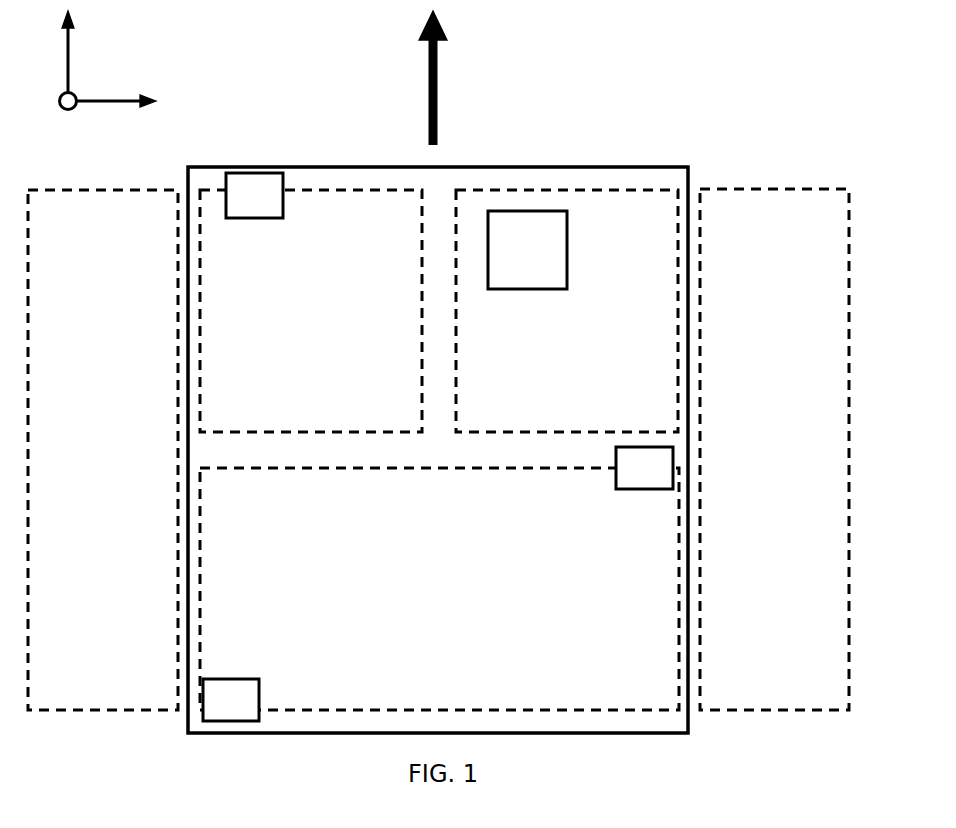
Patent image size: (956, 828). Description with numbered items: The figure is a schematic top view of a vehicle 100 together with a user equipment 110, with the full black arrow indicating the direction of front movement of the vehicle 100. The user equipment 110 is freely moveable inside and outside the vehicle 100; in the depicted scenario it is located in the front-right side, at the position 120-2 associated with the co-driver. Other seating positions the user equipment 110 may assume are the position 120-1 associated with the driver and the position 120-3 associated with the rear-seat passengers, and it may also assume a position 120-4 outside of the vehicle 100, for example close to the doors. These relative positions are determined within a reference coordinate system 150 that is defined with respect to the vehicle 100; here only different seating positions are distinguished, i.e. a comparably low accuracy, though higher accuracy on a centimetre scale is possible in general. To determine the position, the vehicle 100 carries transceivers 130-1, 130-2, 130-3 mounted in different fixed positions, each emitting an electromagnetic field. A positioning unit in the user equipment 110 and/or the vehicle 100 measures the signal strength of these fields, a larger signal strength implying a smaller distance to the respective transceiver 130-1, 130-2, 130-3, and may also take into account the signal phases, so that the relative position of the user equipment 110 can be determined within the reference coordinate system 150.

The vehicle 100 is at (688, 178).
The user equipment 110 is at (566, 278).
The driver position 120-1 is at (200, 263).
The co-driver position 120-2 is at (677, 233).
The rear-seat passengers position 120-3 is at (200, 488).
The outside position 120-4 is at (88, 712).
The transceiver 130-1 is at (243, 172).
The transceiver 130-2 is at (670, 455).
The transceiver 130-3 is at (203, 689).
The reference coordinate system 150 is at (136, 47).